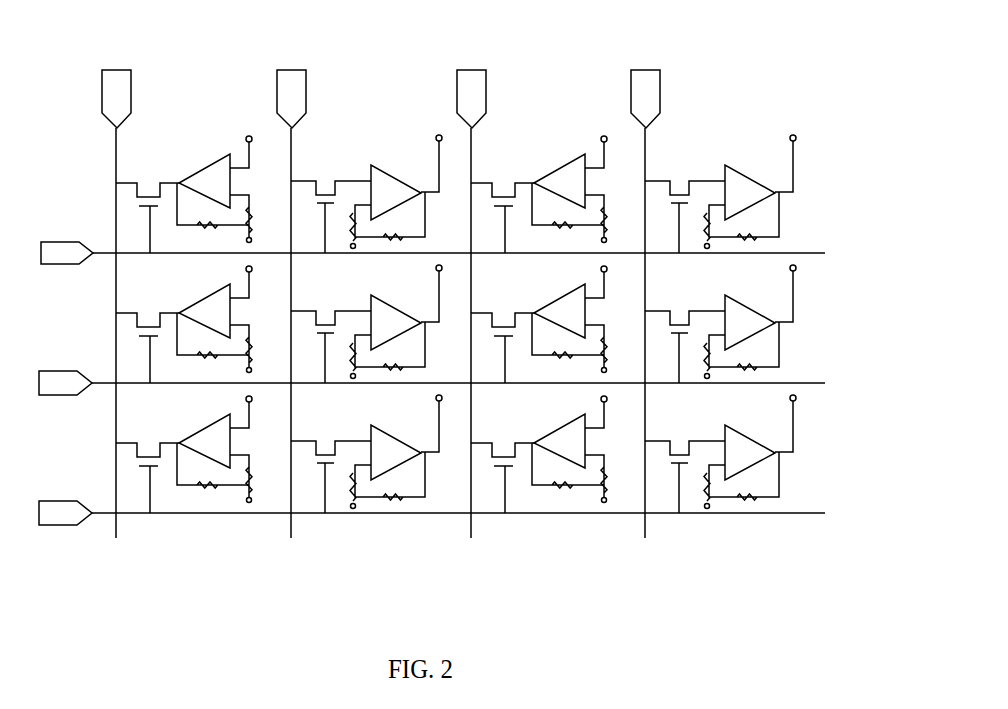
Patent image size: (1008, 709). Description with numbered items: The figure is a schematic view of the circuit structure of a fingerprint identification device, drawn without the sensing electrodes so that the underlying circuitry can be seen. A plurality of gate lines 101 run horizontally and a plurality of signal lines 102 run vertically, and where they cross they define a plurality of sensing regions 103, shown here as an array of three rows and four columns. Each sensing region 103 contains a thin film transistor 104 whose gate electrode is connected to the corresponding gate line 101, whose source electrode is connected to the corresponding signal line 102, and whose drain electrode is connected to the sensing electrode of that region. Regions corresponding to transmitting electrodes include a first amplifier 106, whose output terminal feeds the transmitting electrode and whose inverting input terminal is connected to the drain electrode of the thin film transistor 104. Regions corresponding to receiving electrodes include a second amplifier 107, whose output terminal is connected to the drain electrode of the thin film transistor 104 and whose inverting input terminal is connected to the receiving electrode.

The gate line 101 is at (792, 255).
The signal line 102 is at (287, 493).
The sensing region 103 is at (617, 483).
The thin film transistor 104 is at (508, 197).
The first amplifier 106 is at (740, 190).
The second amplifier 107 is at (568, 188).